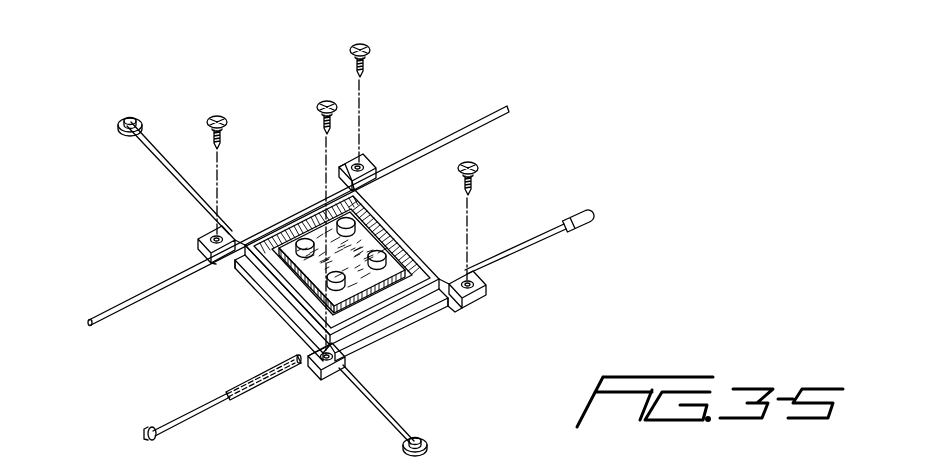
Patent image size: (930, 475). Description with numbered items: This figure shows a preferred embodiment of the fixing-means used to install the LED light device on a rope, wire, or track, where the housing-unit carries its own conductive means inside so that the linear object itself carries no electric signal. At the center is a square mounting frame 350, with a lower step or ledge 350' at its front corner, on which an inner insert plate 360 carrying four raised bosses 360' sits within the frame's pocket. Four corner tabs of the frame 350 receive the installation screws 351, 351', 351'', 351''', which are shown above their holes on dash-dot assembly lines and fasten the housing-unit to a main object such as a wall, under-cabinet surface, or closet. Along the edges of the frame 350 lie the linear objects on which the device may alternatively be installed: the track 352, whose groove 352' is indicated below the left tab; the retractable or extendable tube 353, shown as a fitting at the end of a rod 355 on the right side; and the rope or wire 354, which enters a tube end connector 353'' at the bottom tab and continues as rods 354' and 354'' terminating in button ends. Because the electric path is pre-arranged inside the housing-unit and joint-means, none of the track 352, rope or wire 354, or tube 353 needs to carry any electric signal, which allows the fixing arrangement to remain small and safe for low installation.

The frame base 350 is at (342, 243).
The frame base step 350' is at (501, 341).
The screw 351 is at (399, 85).
The screw 351' is at (303, 194).
The screw 351'' is at (197, 141).
The screw 351''' is at (523, 208).
The track 352 is at (333, 178).
The rod groove 352' is at (177, 305).
The retractable tube 353 is at (631, 222).
The tube end connector 353'' is at (304, 402).
The rope 354 is at (188, 397).
The rod with button end 354' is at (439, 410).
The rod with button end 354'' is at (133, 149).
The rod 355 is at (527, 253).
The insert plate 360 is at (357, 189).
The boss 360' is at (328, 303).